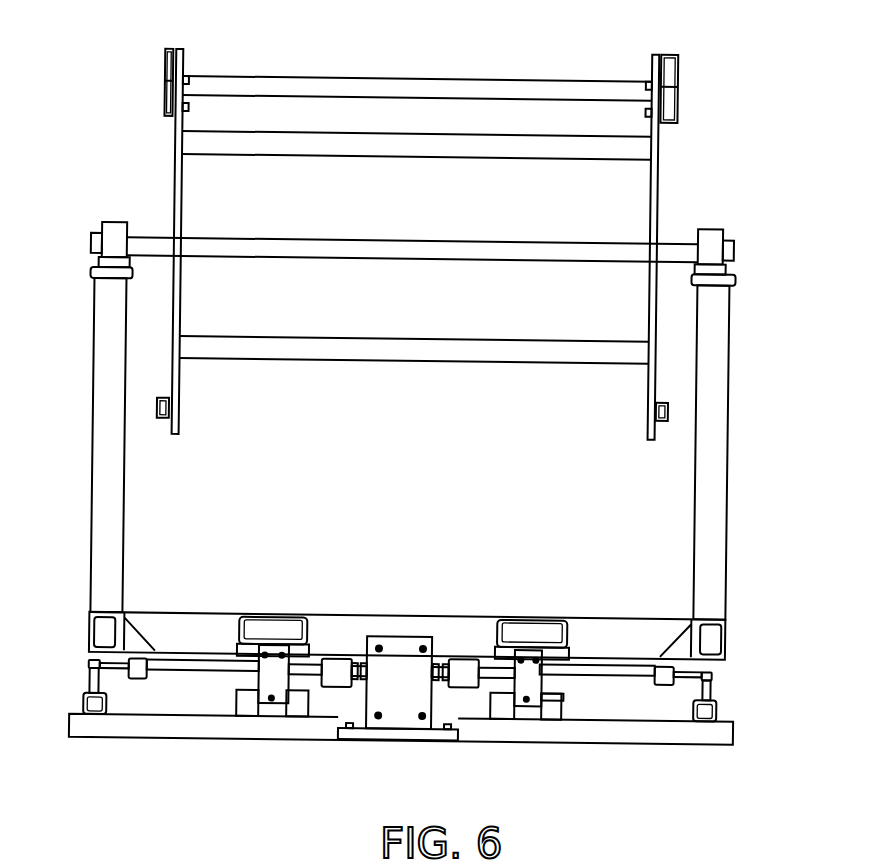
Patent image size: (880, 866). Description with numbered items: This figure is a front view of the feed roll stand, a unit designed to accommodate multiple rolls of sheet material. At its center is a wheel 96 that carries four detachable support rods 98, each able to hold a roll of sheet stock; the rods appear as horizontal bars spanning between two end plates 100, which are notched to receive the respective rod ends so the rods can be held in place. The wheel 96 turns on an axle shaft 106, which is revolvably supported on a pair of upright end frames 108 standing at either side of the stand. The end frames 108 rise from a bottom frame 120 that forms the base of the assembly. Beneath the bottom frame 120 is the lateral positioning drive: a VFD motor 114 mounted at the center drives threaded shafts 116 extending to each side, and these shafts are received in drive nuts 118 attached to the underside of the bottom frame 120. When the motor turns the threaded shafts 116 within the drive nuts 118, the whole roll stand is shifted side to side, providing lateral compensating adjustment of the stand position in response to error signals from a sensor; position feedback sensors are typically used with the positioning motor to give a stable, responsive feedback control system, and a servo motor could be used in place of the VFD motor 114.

The wheel 96 is at (391, 231).
The support rods 98 is at (240, 128).
The end plates 100 is at (168, 186).
The axle shaft 106 is at (481, 233).
The end frames 108 is at (85, 538).
The VFD motor 114 is at (381, 694).
The threaded shafts 116 is at (209, 676).
The drive nuts 118 is at (140, 678).
The bottom frame 120 is at (734, 649).